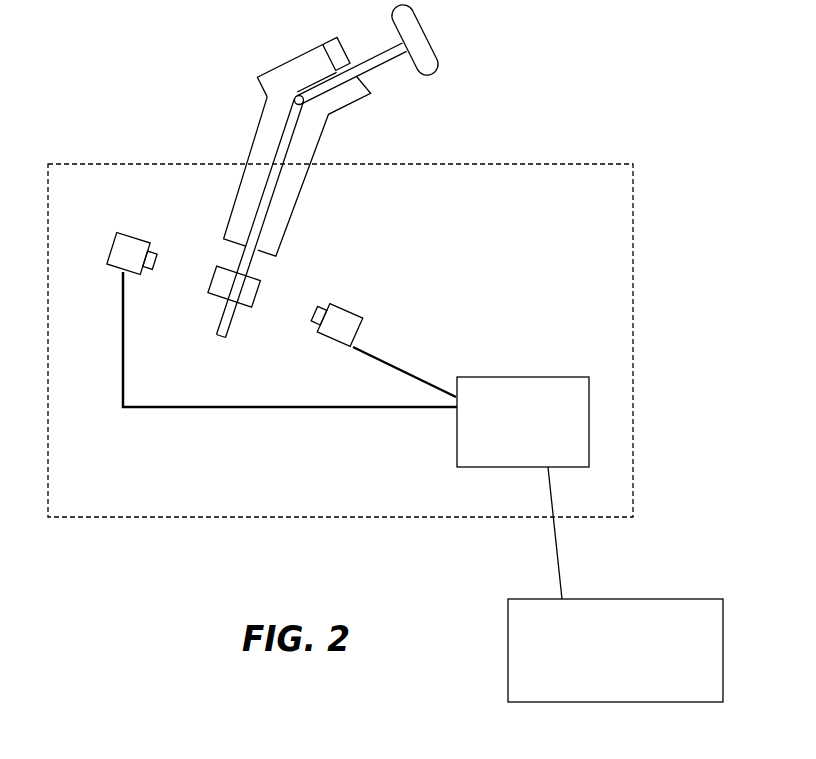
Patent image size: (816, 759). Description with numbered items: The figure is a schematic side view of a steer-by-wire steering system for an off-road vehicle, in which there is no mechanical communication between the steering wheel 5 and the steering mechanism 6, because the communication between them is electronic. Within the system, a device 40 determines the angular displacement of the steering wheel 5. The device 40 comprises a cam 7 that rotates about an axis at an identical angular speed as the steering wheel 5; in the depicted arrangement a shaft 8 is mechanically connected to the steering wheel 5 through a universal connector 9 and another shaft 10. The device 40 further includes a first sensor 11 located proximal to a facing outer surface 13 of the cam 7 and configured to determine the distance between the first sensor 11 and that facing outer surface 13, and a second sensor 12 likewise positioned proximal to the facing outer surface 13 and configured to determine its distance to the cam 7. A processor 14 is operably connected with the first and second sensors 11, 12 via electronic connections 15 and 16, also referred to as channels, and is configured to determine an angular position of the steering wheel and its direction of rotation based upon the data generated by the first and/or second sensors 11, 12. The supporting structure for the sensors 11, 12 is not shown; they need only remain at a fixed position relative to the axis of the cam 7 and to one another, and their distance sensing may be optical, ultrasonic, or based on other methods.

The steering wheel 5 is at (440, 72).
The steering mechanism 6 is at (690, 600).
The cam 7 is at (258, 298).
The shaft 8 is at (256, 142).
The universal connector 9 is at (284, 65).
The shaft 10 is at (322, 43).
The first sensor 11 is at (108, 248).
The second sensor 12 is at (345, 305).
The facing outer surface 13 is at (210, 288).
The processor 14 is at (547, 377).
The electronic connection 15 is at (268, 412).
The electronic connection 16 is at (392, 350).
The device 40 is at (108, 514).